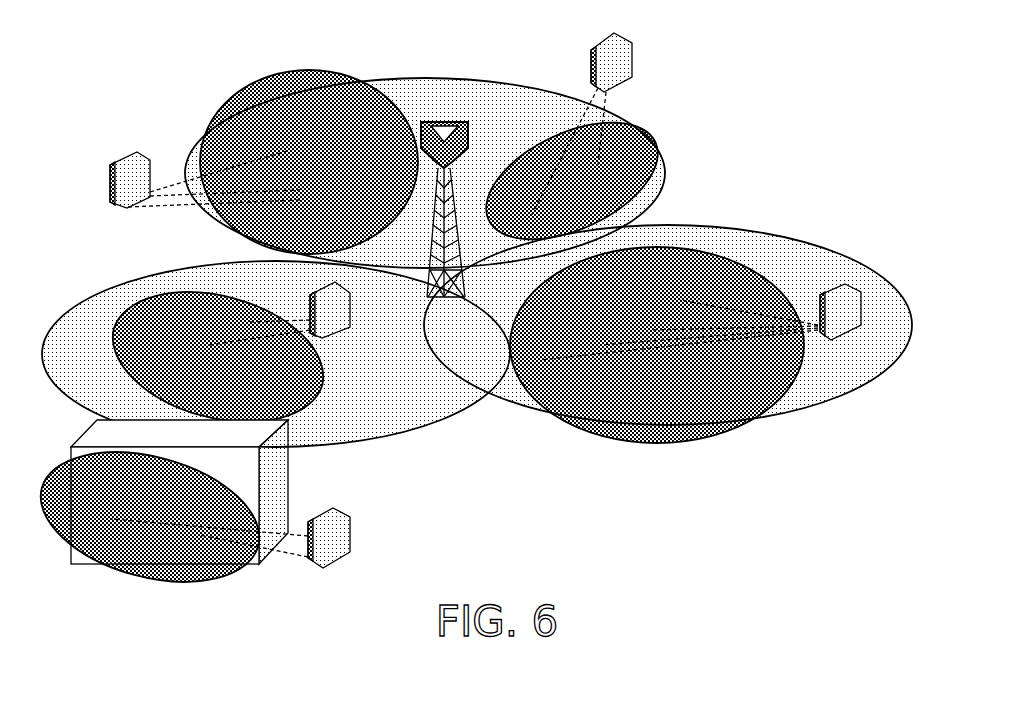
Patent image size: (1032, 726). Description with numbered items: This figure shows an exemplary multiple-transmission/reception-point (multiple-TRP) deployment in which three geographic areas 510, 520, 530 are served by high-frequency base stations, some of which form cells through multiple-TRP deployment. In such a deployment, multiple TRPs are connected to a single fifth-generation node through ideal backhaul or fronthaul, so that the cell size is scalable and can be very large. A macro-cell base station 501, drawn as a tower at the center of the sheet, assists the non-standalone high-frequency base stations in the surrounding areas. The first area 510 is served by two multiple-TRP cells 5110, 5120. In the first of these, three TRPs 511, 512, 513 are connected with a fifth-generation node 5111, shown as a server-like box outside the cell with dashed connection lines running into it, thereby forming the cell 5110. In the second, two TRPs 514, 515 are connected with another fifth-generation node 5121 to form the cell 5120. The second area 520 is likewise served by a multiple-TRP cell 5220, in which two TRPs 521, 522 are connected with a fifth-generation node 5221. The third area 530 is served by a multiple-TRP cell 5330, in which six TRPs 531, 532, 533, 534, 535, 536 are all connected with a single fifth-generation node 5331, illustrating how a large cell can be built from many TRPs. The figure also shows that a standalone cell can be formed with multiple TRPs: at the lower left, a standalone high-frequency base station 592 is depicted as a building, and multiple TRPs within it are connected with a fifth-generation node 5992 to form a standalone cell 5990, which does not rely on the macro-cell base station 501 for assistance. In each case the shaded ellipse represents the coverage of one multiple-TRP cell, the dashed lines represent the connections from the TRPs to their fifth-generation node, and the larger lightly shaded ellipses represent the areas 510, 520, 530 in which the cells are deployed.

The macro-cell base station 501 is at (445, 122).
The area 510 is at (204, 132).
The multiple-TRP cell 5110 is at (256, 74).
The 5G node 5111 is at (126, 154).
The TRP 511 is at (261, 152).
The TRP 512 is at (308, 68).
The TRP 513 is at (354, 154).
The TRP 514 is at (504, 177).
The TRP 515 is at (577, 127).
The multiple-TRP cell 5120 is at (651, 140).
The 5G node 5121 is at (594, 50).
The area 520 is at (106, 290).
The multiple-TRP cell 5220 is at (256, 300).
The 5G node 5221 is at (316, 296).
The TRP 521 is at (153, 314).
The TRP 522 is at (163, 344).
The area 530 is at (905, 304).
The multiple-TRP cell 5330 is at (700, 440).
The 5G node 5331 is at (839, 284).
The TRP 531 is at (682, 262).
The TRP 532 is at (727, 310).
The TRP 533 is at (660, 345).
The TRP 534 is at (728, 362).
The TRP 535 is at (606, 272).
The TRP 536 is at (564, 320).
The standalone HF base station 592 is at (292, 473).
The standalone cell 5990 is at (200, 580).
The 5G node 5992 is at (360, 520).